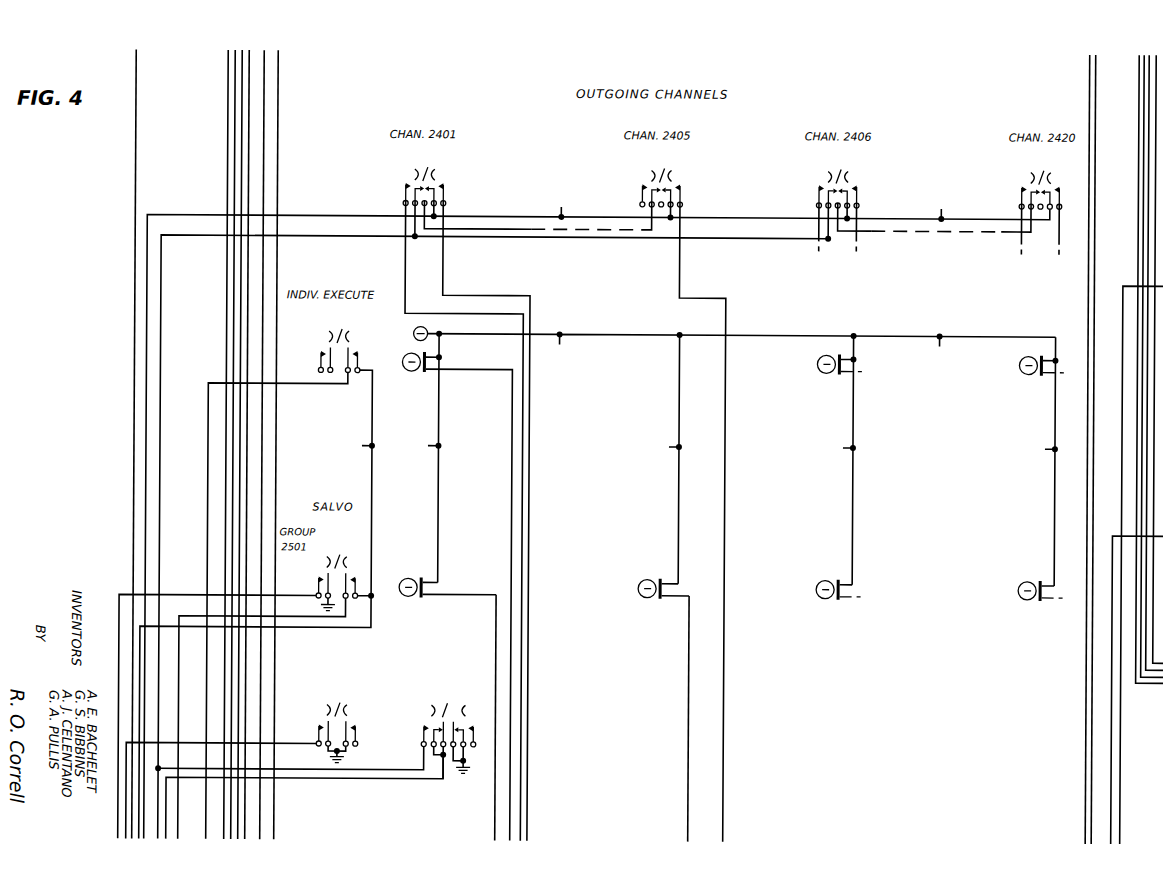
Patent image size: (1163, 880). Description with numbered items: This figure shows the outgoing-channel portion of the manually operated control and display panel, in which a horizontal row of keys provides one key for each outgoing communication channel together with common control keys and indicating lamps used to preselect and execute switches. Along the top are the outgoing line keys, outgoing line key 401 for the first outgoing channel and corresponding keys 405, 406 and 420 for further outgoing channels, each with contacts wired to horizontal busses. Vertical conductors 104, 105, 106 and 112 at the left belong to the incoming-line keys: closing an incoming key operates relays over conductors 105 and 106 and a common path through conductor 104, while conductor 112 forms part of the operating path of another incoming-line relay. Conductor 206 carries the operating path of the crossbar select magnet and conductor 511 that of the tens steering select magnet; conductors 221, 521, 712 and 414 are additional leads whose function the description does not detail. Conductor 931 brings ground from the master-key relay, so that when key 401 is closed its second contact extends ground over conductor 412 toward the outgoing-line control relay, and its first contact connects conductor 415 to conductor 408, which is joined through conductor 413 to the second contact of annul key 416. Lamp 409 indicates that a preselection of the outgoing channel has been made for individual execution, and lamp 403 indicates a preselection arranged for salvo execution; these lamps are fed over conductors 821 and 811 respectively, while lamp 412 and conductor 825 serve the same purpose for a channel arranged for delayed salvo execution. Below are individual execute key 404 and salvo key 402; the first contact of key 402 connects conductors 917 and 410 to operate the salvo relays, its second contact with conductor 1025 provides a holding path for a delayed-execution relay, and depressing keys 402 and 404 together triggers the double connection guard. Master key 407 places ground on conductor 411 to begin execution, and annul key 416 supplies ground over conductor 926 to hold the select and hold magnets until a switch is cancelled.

The conductor 104 is at (136, 67).
The conductor 105 is at (262, 67).
The conductor 106 is at (247, 90).
The conductor 112 is at (276, 827).
The conductor 206 is at (1088, 72).
The conductor 221 is at (1094, 96).
The conductor 931 is at (148, 253).
The conductor 408 is at (302, 238).
The conductor 415 is at (404, 255).
The conductor and lamp 412 is at (442, 255).
The conductor 414 is at (679, 255).
The conductor 511 is at (1122, 283).
The conductor 521 is at (1113, 716).
The conductor 712 is at (206, 532).
The conductor 1025 is at (180, 595).
The conductor 917 is at (372, 618).
The conductor 410 is at (292, 619).
The conductor 411 is at (292, 743).
The conductor 413 is at (390, 770).
The conductor 926 is at (311, 780).
The conductor 811 is at (497, 827).
The conductor 825 is at (690, 827).
The conductor 821 is at (511, 563).
The lamp 409 is at (404, 368).
The lamp 403 is at (409, 579).
The outgoing line key 401 is at (425, 176).
The channel 2405 switch 405 is at (662, 177).
The channel 2406 switch 406 is at (839, 178).
The channel 2420 switch 420 is at (1042, 180).
The individual execute key 404 is at (346, 454).
The salvo key 402 is at (341, 574).
The master key 407 is at (334, 715).
The annul key 416 is at (447, 724).